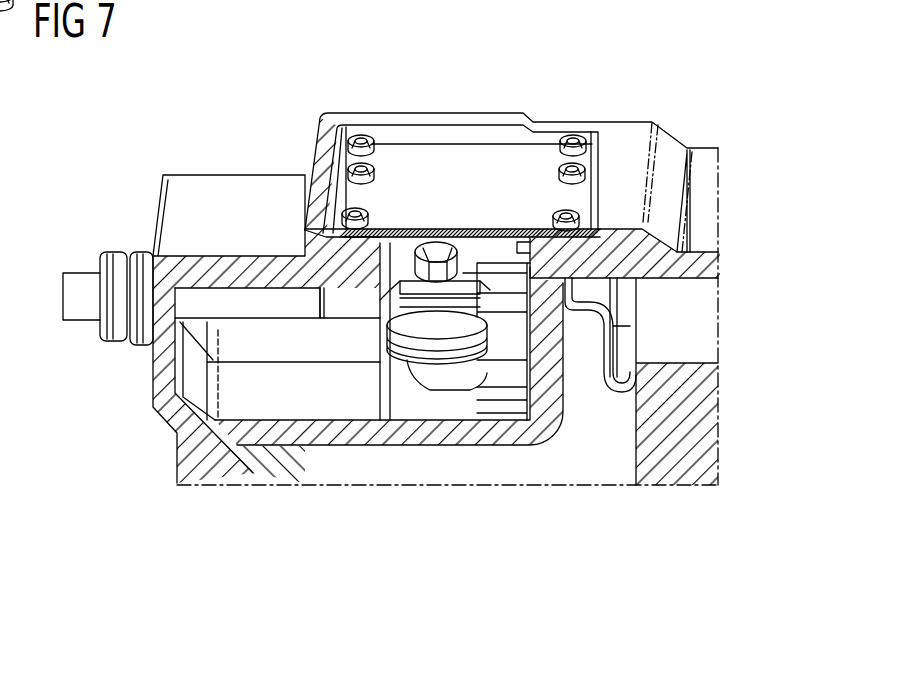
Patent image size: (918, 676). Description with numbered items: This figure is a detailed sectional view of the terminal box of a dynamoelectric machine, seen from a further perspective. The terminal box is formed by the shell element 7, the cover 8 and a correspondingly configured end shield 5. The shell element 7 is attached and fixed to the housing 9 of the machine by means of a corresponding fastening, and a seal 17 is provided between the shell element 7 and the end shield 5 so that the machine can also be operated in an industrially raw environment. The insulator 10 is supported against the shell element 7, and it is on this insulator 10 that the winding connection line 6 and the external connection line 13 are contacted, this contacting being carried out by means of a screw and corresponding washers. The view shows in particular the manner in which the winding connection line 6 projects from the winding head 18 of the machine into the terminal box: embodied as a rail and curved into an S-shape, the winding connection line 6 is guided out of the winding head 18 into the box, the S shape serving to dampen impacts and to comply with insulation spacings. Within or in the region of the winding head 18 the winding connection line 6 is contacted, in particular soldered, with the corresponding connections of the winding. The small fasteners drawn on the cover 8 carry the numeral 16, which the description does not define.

The end shield 5 is at (266, 300).
The winding connection line 6 is at (613, 327).
The shell element 7 is at (497, 440).
The cover 8 is at (445, 165).
The housing 9 is at (722, 270).
The insulator 10 is at (430, 380).
The external connection line 13 is at (277, 413).
The screws 16 is at (361, 136).
The seal 17 is at (389, 391).
The winding head 18 is at (697, 311).